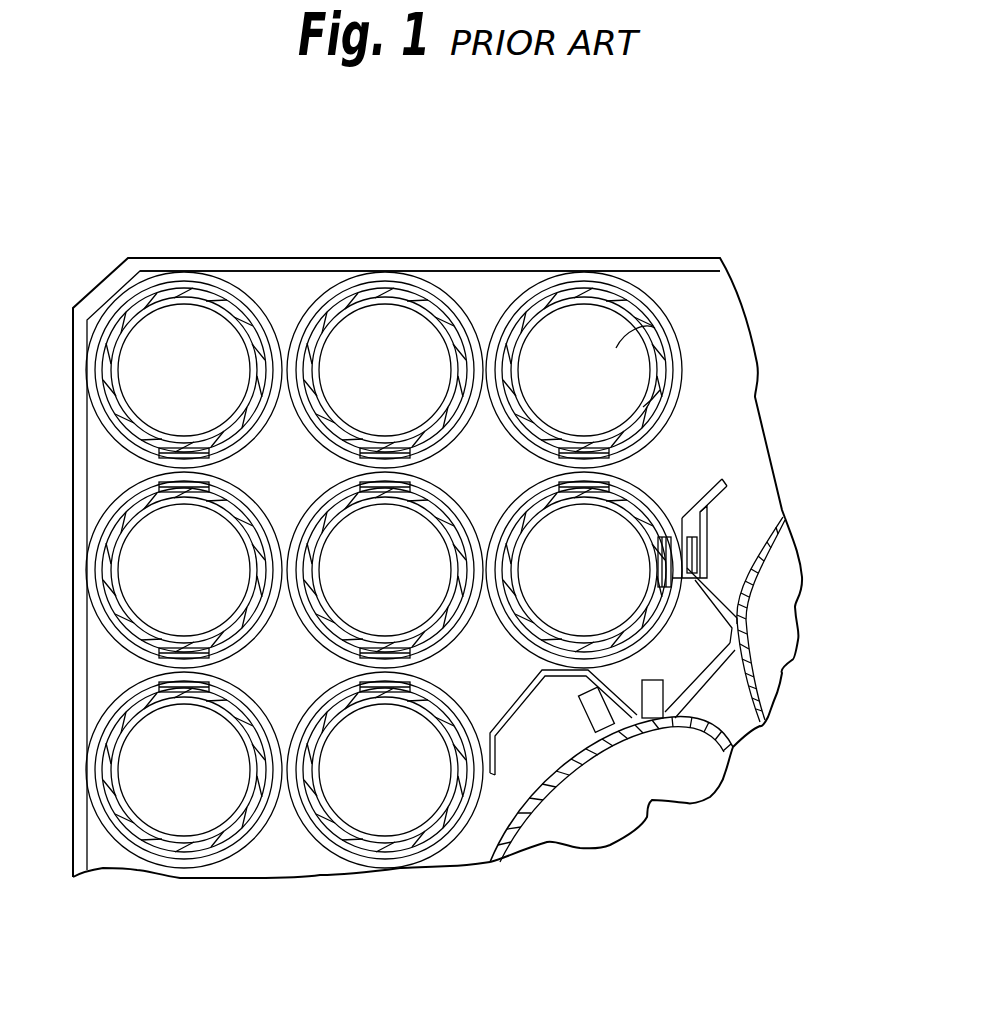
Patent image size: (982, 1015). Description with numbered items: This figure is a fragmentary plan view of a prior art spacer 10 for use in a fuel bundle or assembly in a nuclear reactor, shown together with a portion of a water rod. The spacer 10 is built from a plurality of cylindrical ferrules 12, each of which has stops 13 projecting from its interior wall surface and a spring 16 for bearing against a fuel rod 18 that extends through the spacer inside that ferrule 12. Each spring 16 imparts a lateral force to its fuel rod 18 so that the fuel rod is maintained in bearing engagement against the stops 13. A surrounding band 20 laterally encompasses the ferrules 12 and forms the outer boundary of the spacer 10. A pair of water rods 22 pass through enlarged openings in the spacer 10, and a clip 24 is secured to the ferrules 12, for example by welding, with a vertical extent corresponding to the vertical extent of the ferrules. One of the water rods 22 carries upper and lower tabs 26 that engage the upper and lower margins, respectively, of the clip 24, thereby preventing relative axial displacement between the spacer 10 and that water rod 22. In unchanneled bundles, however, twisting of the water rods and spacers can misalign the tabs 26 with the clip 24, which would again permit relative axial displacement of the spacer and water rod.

The spacer 10 is at (234, 231).
The cylindrical ferrule 12 is at (675, 340).
The stop 13 is at (640, 366).
The spring 16 is at (612, 450).
The fuel rod 18 is at (643, 407).
The surrounding band 20 is at (557, 258).
The water rod 22 is at (753, 685).
The clip 24 is at (706, 604).
The tab 26 is at (650, 706).